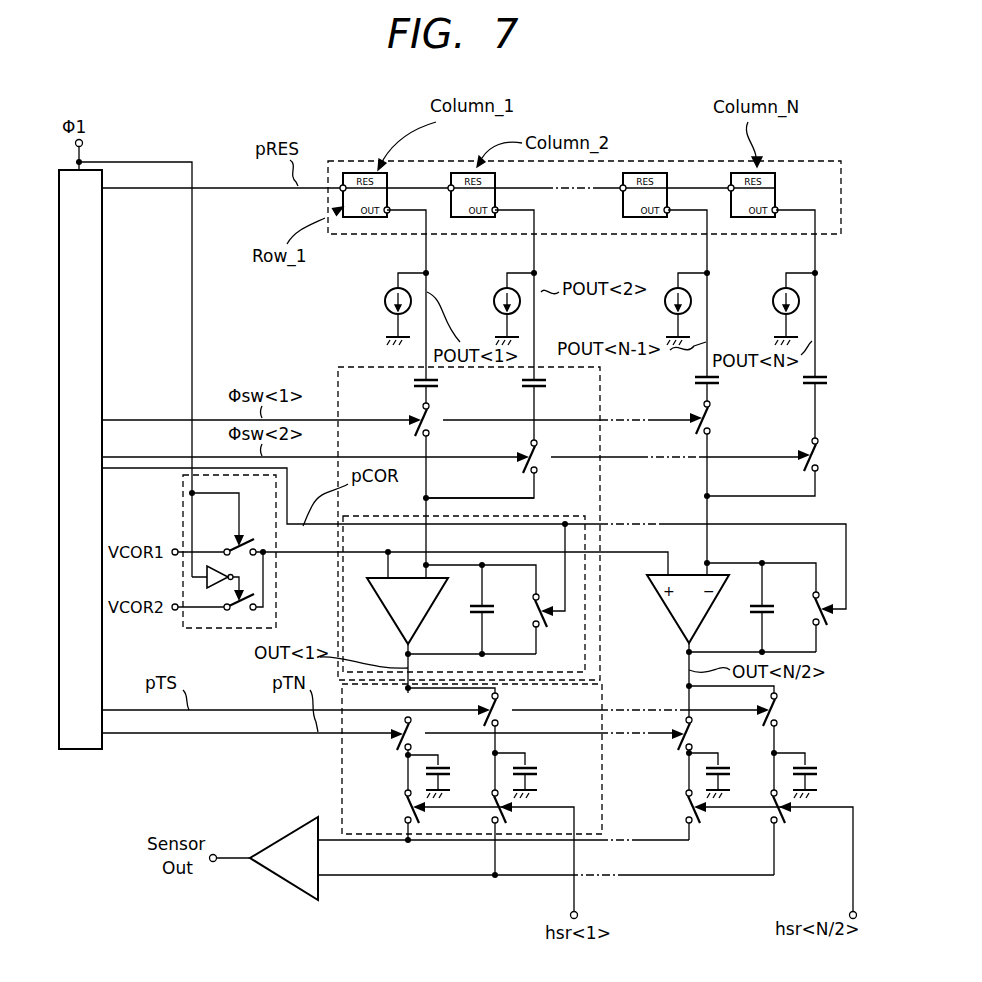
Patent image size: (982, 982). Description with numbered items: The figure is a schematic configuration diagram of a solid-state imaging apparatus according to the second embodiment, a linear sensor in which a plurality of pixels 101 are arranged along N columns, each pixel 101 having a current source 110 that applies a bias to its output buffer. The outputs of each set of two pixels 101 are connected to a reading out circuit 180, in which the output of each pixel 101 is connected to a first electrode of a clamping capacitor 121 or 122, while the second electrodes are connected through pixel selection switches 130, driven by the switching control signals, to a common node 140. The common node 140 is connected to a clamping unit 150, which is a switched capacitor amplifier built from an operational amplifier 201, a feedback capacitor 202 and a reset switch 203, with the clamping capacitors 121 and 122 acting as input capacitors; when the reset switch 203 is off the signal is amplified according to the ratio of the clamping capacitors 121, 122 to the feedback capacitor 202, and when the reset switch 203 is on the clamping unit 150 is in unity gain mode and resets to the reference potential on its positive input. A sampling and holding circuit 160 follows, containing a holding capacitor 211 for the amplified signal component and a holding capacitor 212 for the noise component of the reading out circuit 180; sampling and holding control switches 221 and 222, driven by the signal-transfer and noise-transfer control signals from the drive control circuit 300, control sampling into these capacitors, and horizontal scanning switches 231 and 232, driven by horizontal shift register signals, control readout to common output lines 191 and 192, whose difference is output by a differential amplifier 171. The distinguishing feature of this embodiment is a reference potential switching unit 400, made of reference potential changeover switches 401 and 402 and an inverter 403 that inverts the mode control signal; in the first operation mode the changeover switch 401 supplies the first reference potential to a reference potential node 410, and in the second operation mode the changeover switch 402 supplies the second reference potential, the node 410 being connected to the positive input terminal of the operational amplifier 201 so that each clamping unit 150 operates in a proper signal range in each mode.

The pixel 101 is at (389, 180).
The current source 110 is at (384, 300).
The clamping capacitor 121 is at (414, 383).
The clamping capacitor 122 is at (522, 385).
The pixel selection switch 130 is at (416, 411).
The common node 140 is at (424, 499).
The clamping unit 150 is at (560, 512).
The sampling and holding circuit 160 is at (604, 770).
The differential amplifier 171 is at (290, 833).
The reading out circuit 180 is at (602, 611).
The common output line 191 is at (378, 843).
The common output line 192 is at (412, 874).
The operational amplifier 201 is at (425, 618).
The feedback capacitor 202 is at (495, 614).
The reset switch 203 is at (548, 632).
The holding capacitor 211 is at (445, 767).
The holding capacitor 212 is at (528, 762).
The sampling and holding control switch 221 is at (402, 748).
The sampling and holding control switch 222 is at (505, 698).
The horizontal scanning switch 231 is at (405, 814).
The horizontal scanning switch 232 is at (508, 812).
The drive control circuit 300 is at (103, 286).
The reference potential switching unit 400 is at (214, 650).
The reference potential changeover switch 401 is at (249, 532).
The reference potential changeover switch 402 is at (252, 614).
The inverter 403 is at (205, 584).
The reference potential node 410 is at (312, 560).